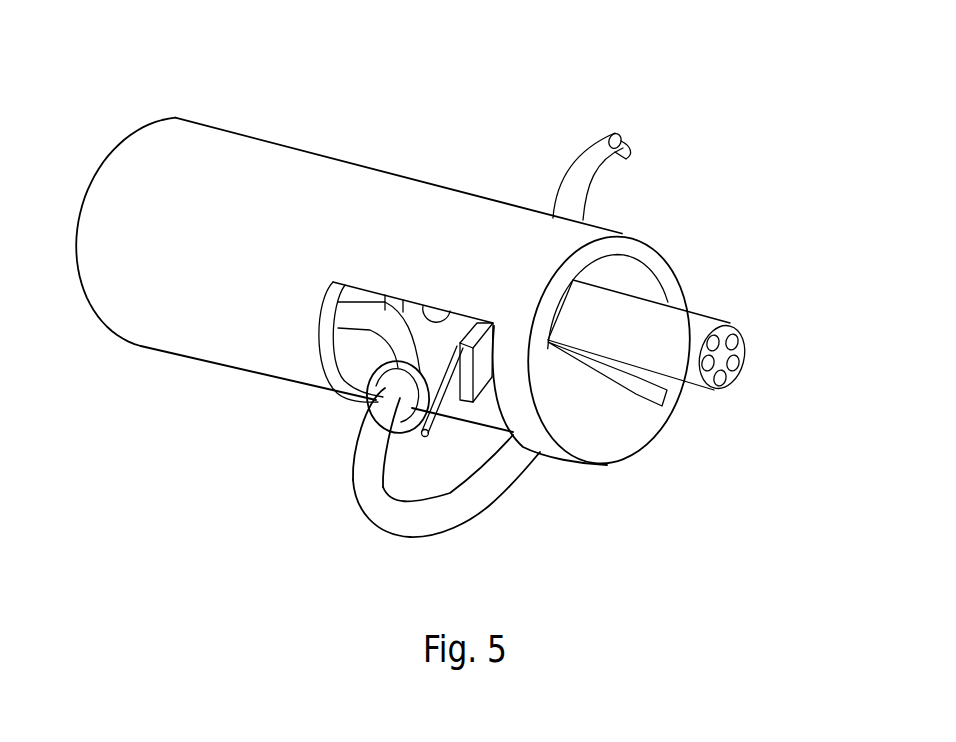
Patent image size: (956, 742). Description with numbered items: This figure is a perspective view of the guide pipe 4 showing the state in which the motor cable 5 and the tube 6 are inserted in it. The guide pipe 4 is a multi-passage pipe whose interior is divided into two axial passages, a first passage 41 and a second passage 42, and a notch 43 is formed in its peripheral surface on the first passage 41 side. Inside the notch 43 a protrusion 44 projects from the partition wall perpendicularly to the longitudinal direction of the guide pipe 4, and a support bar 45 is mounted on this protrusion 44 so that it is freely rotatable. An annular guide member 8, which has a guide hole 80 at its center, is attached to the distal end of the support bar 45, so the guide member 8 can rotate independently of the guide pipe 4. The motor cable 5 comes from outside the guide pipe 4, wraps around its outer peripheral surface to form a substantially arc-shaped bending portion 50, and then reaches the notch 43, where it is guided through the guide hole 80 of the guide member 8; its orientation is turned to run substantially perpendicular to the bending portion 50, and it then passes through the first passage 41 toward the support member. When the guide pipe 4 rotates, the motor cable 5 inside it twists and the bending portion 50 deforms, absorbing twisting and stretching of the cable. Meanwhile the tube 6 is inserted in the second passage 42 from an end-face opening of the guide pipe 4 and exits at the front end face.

The guide pipe 4 is at (238, 152).
The motor cable 5 is at (575, 182).
The tube 6 is at (680, 340).
The guide member 8 is at (370, 401).
The first passage 41 is at (347, 370).
The second passage 42 is at (630, 277).
The notch 43 is at (447, 308).
The protrusion 44 is at (467, 371).
The support bar 45 is at (432, 428).
The bending portion 50 is at (468, 507).
The guide hole 80 is at (358, 470).